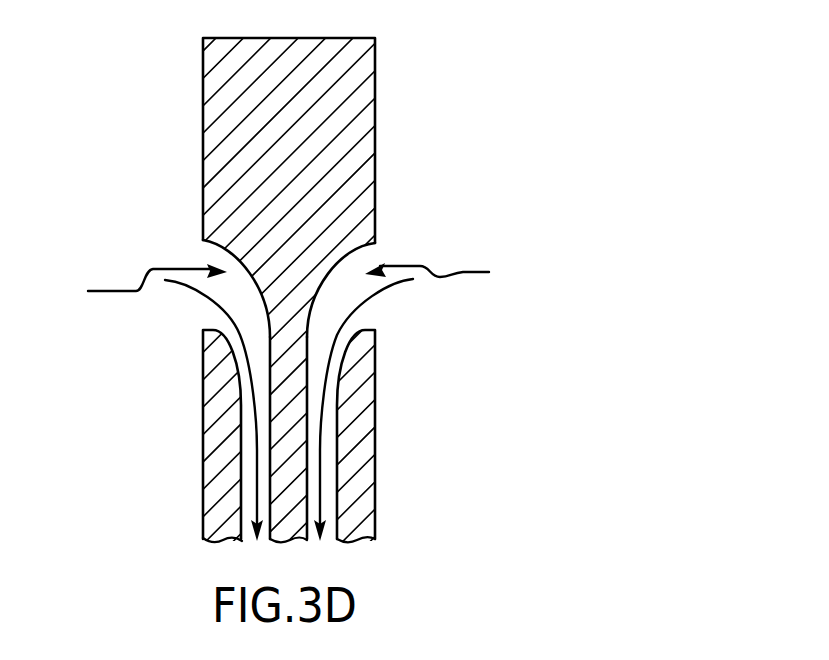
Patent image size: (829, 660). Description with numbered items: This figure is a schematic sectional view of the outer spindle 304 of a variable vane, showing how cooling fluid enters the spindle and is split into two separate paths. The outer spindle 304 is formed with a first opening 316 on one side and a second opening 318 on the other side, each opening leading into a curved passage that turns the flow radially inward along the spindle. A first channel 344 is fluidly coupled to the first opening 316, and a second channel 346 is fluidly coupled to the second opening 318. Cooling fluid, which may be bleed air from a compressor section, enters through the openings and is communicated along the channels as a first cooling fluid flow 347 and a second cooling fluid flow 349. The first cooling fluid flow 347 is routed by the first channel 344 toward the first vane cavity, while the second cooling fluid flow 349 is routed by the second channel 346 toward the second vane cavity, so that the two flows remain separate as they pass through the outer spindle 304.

The outer spindle 304 is at (375, 148).
The first opening 316 is at (203, 243).
The second opening 318 is at (374, 241).
The first channel 344 is at (141, 285).
The second channel 346 is at (444, 273).
The first cooling fluid flow 347 is at (200, 283).
The second cooling fluid flow 349 is at (373, 291).